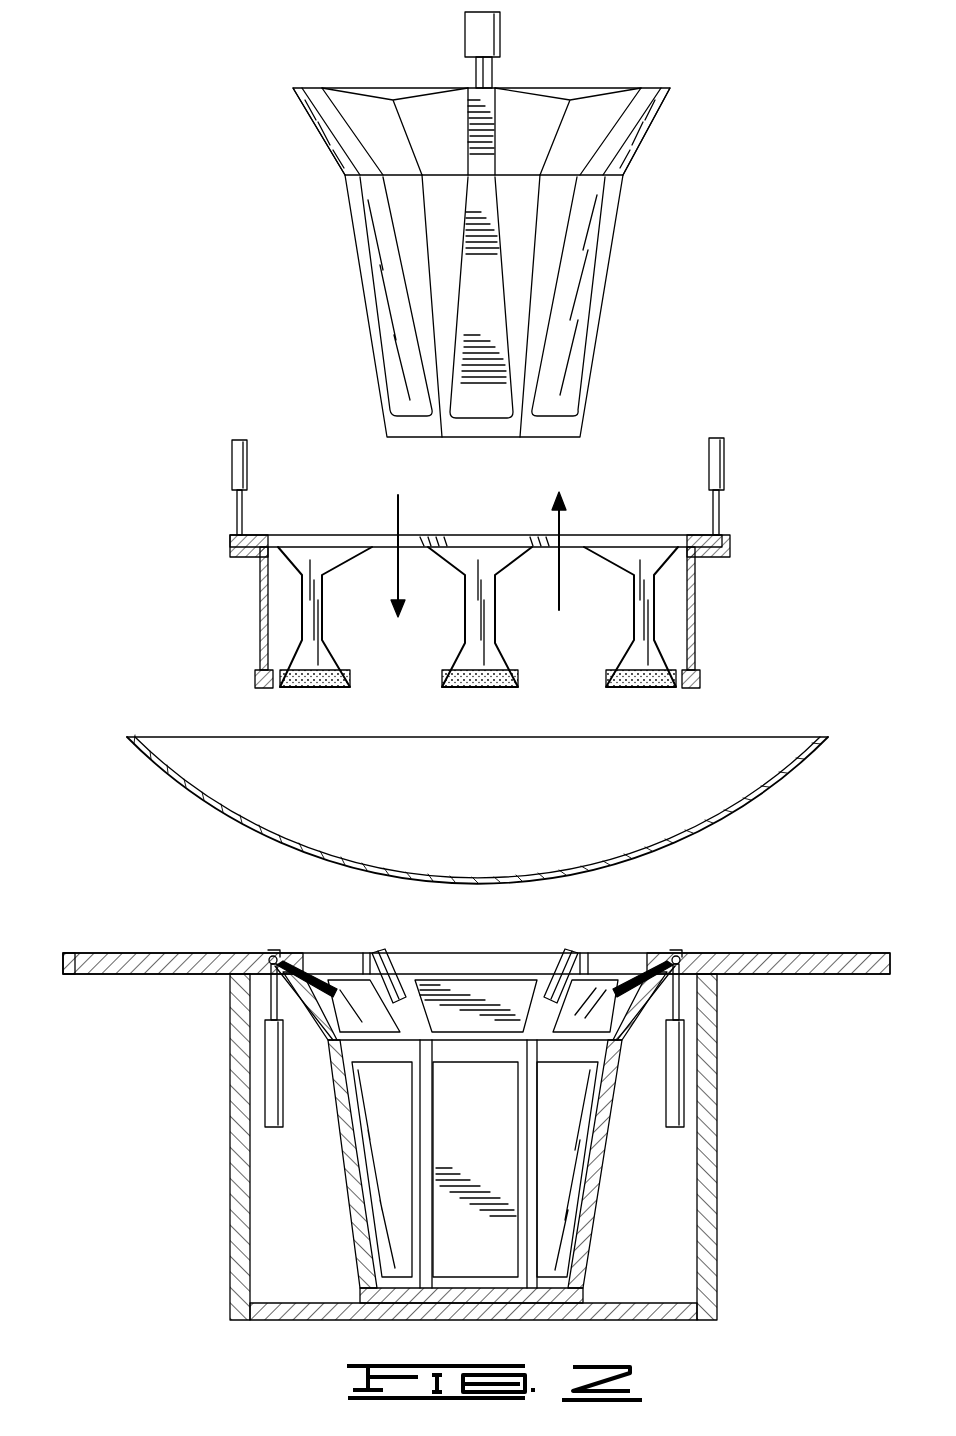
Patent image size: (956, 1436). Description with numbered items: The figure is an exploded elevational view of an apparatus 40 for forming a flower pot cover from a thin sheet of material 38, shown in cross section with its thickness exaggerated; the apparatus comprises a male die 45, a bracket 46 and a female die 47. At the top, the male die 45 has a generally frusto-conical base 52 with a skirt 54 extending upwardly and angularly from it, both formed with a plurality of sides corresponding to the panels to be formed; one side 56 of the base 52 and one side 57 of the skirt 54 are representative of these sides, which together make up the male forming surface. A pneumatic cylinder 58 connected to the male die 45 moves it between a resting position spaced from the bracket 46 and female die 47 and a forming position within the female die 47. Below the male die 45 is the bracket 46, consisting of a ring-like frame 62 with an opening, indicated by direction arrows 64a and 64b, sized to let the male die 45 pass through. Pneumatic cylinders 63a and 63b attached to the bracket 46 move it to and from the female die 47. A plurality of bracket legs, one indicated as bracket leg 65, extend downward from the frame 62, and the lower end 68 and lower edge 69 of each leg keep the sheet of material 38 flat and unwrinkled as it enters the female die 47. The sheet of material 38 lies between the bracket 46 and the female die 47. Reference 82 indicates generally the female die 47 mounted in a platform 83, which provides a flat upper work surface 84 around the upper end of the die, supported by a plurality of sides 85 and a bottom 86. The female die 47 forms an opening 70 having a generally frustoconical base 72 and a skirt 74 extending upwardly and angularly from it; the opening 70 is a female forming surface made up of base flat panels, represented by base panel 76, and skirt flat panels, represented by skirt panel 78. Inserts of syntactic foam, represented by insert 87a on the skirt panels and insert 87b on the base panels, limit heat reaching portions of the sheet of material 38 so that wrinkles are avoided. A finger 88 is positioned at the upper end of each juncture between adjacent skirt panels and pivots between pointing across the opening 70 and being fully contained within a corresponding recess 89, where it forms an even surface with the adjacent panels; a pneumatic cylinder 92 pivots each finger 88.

The apparatus 40 is at (262, 183).
The pneumatic cylinder 58 is at (498, 35).
The side of skirt 57 is at (530, 115).
The skirt 54 is at (304, 118).
The male die 45 is at (641, 151).
The side of base 56 is at (446, 290).
The base 52 is at (605, 290).
The bracket 46 is at (612, 529).
The frame 62 is at (236, 540).
The pneumatic cylinder 63a is at (231, 449).
The pneumatic cylinder 63b is at (725, 449).
The direction arrow 64a is at (397, 507).
The direction arrow 64b is at (556, 515).
The bracket leg 65 is at (653, 603).
The lower end 68 is at (514, 675).
The lower edge 69 is at (477, 686).
The sheet of material 38 is at (778, 795).
The female die mounted in platform 82 is at (238, 948).
The upper work surface 84 is at (170, 952).
The platform 83 is at (66, 964).
The side 85 is at (232, 1118).
The bottom 86 is at (587, 1322).
The pneumatic cylinder 92 is at (267, 1062).
The finger 88 is at (312, 972).
The recess 89 is at (583, 980).
The opening 70 is at (470, 1108).
The skirt 74 is at (633, 1027).
The skirt flat panel 78 is at (528, 1025).
The insert of syntactic foam 87a is at (502, 978).
The female die 47 is at (607, 1173).
The base 72 is at (600, 1207).
The base flat panel 76 is at (523, 1242).
The insert of syntactic foam 87b is at (460, 1263).